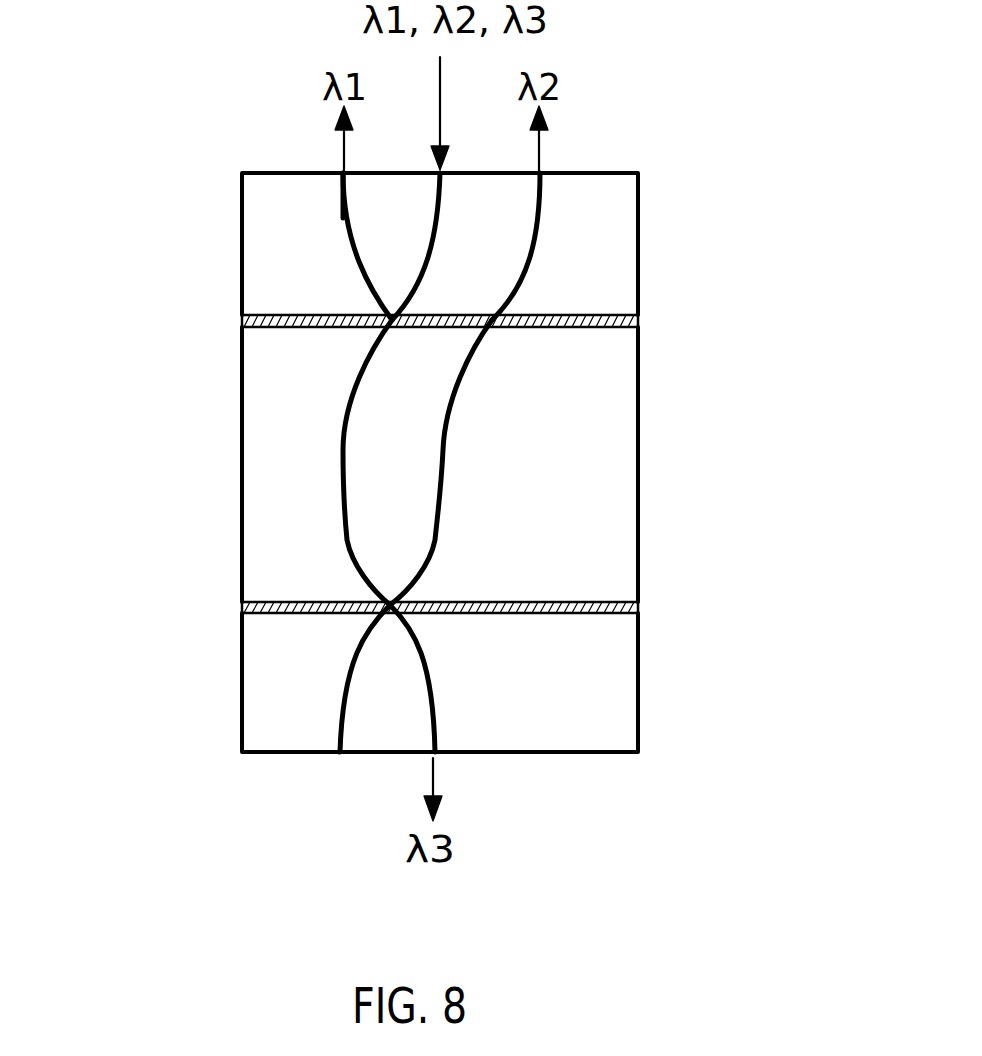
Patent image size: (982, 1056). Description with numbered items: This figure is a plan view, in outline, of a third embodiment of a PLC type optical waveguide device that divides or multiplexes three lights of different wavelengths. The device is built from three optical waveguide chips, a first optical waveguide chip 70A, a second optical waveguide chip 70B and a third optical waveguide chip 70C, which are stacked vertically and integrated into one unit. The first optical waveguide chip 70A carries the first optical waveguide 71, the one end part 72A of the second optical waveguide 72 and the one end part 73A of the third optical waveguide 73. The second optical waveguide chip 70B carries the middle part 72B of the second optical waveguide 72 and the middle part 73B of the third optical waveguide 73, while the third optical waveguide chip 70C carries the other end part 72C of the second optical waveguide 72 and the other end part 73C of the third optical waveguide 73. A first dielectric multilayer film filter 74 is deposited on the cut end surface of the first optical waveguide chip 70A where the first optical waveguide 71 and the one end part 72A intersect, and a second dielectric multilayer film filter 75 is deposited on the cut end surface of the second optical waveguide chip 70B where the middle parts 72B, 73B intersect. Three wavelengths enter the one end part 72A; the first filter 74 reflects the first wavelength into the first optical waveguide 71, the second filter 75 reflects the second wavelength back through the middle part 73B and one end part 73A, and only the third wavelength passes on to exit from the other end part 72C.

The first optical waveguide chip 70A is at (640, 248).
The second optical waveguide chip 70B is at (640, 475).
The third optical waveguide chip 70C is at (640, 678).
The first optical waveguide 71 is at (343, 218).
The second optical waveguide 72 is at (381, 457).
The one end part of the second optical waveguide 72A is at (447, 222).
The middle part of the second optical waveguide 72B is at (340, 446).
The other end part of the second optical waveguide 72C is at (433, 704).
The third optical waveguide 73 is at (535, 498).
The one end part of the third optical waveguide 73A is at (540, 232).
The middle part of the third optical waveguide 73B is at (455, 392).
The other end part of the third optical waveguide 73C is at (345, 678).
The first dielectric multilayer film filter 74 is at (296, 315).
The second dielectric multilayer film filter 75 is at (293, 615).